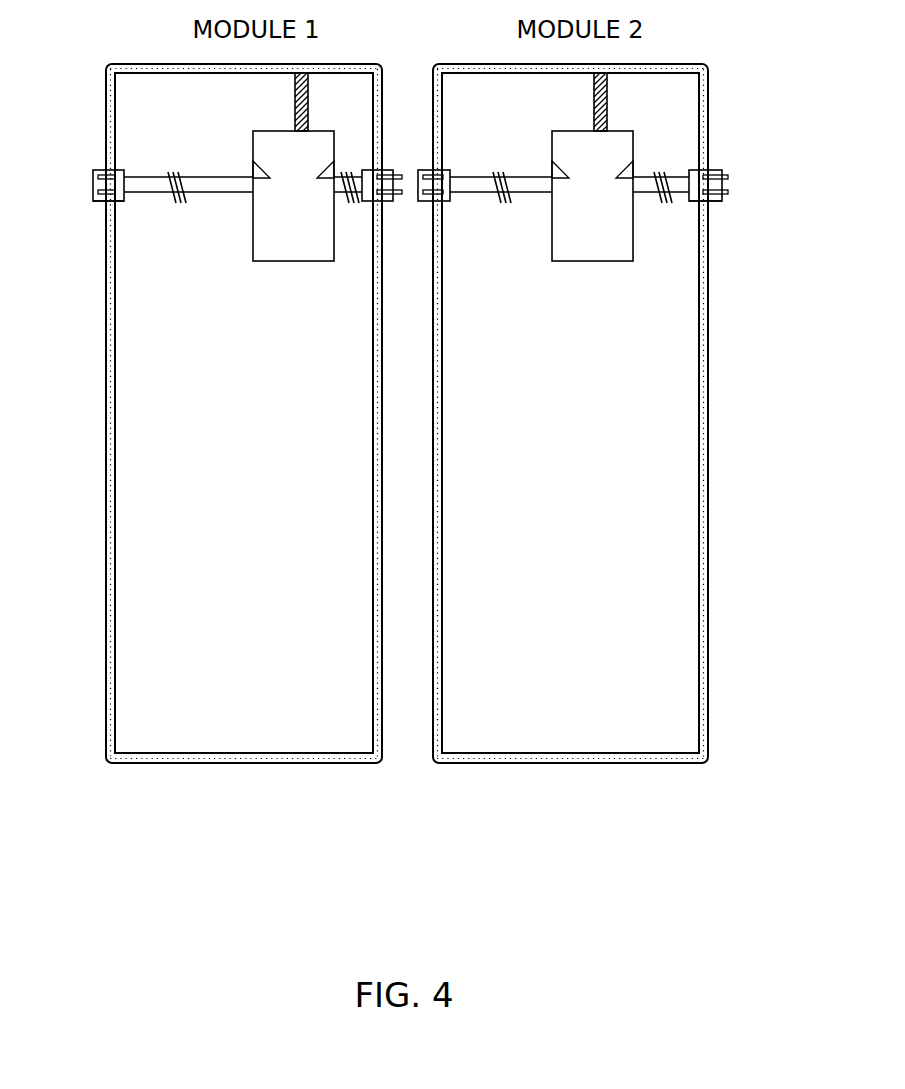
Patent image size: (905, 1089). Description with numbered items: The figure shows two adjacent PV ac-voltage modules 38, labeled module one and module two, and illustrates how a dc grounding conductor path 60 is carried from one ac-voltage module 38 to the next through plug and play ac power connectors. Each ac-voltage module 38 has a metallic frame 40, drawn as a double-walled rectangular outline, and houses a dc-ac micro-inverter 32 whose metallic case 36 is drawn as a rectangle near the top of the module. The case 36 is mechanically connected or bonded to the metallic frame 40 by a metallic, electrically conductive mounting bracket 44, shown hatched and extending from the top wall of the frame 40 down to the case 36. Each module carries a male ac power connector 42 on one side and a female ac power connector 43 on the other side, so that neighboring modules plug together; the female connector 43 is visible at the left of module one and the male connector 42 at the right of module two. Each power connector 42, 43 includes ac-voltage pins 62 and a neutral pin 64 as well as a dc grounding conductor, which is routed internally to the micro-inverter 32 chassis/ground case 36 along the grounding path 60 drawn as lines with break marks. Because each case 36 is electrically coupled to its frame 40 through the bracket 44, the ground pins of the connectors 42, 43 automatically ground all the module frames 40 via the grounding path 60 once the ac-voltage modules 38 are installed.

The dc-ac micro-inverter 32 is at (263, 270).
The metallic case 36 is at (315, 262).
The ac-voltage module 38 is at (98, 403).
The metallic frame 40 is at (106, 336).
The male ac power connector 42 is at (713, 170).
The female ac power connector 43 is at (93, 176).
The mounting bracket 44 is at (295, 97).
The dc grounding conductor path 60 is at (182, 177).
The ac-voltage pins 62 is at (112, 194).
The neutral pin 64 is at (109, 199).